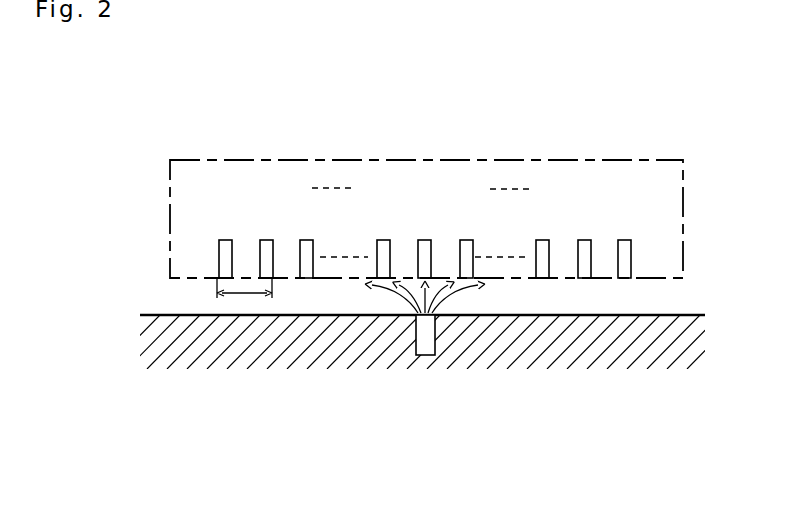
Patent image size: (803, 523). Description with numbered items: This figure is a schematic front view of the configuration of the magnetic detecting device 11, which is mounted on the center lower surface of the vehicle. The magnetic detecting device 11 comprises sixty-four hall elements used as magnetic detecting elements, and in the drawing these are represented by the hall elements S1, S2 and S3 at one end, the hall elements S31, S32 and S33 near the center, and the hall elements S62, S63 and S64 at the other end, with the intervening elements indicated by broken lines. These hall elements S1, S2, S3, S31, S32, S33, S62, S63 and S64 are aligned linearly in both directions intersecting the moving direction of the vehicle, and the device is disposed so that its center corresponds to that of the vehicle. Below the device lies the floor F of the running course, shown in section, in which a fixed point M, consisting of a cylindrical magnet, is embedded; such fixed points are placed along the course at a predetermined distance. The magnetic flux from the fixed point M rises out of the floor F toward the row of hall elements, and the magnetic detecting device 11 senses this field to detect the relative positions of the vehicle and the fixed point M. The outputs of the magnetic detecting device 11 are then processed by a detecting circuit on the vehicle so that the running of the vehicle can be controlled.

The magnetic detecting device 11 is at (466, 160).
The hall element S1 is at (223, 239).
The hall element S2 is at (263, 239).
The hall element S3 is at (305, 239).
The hall element S31 is at (383, 239).
The hall element S32 is at (425, 239).
The hall element S33 is at (466, 239).
The hall element S62 is at (541, 239).
The hall element S63 is at (583, 239).
The hall element S64 is at (624, 239).
The floor F is at (318, 317).
The fixed point M is at (426, 357).